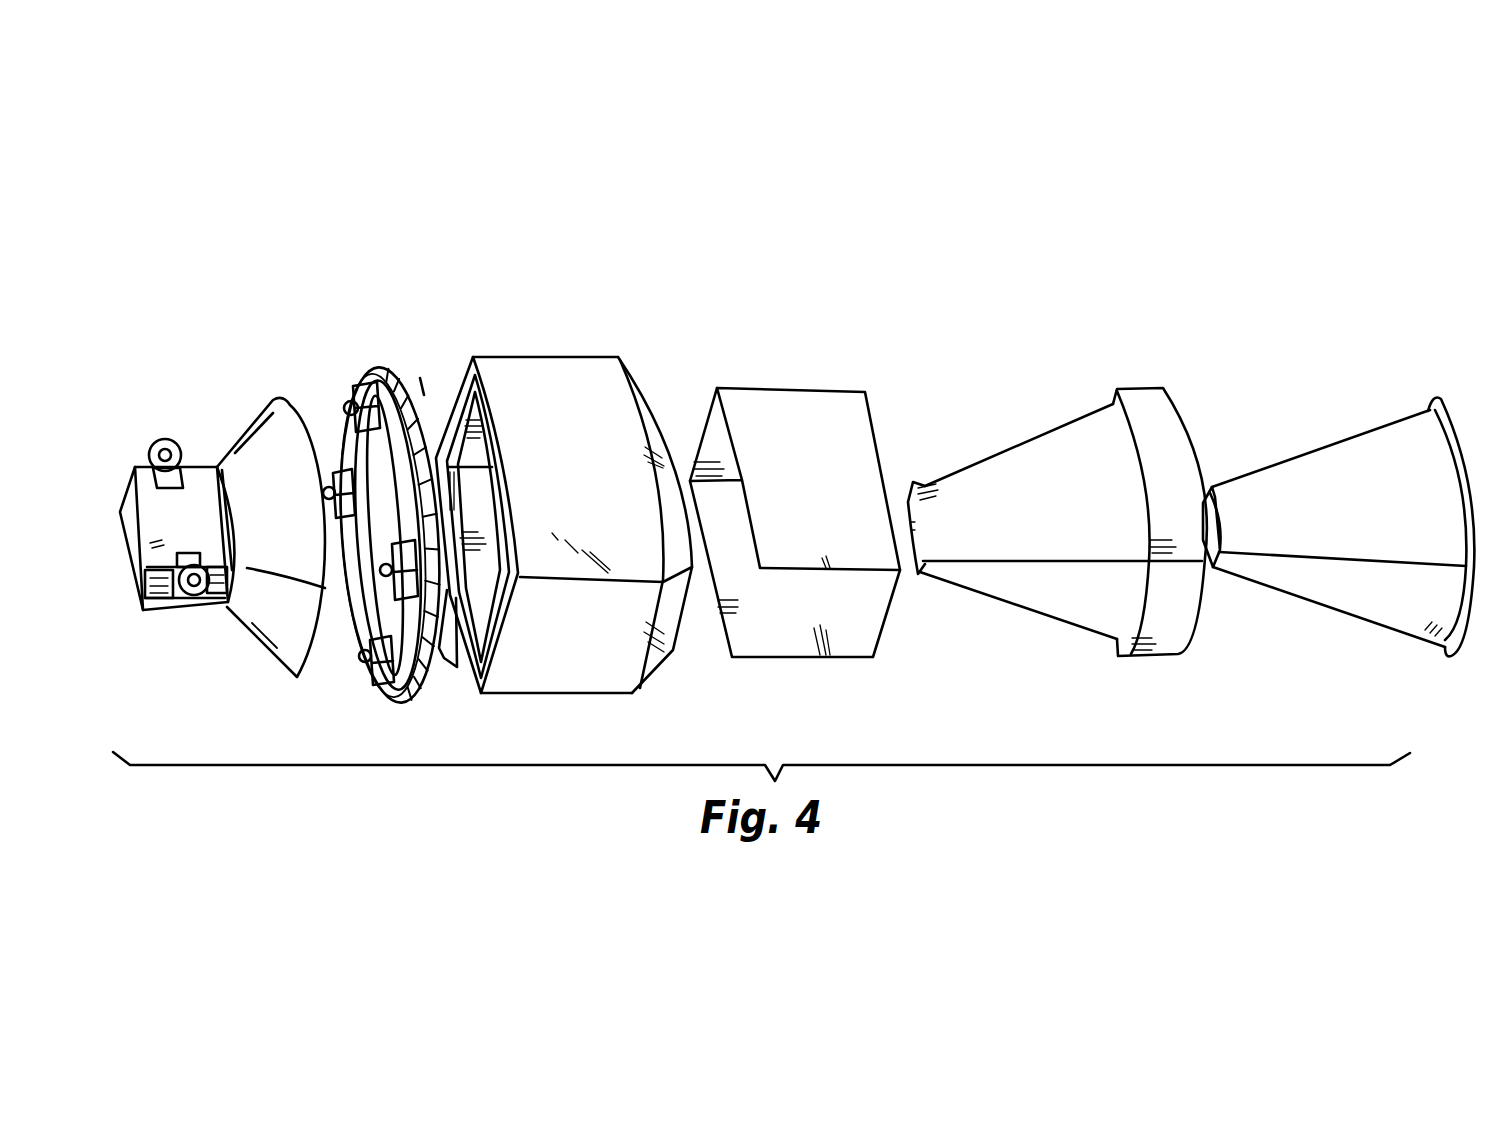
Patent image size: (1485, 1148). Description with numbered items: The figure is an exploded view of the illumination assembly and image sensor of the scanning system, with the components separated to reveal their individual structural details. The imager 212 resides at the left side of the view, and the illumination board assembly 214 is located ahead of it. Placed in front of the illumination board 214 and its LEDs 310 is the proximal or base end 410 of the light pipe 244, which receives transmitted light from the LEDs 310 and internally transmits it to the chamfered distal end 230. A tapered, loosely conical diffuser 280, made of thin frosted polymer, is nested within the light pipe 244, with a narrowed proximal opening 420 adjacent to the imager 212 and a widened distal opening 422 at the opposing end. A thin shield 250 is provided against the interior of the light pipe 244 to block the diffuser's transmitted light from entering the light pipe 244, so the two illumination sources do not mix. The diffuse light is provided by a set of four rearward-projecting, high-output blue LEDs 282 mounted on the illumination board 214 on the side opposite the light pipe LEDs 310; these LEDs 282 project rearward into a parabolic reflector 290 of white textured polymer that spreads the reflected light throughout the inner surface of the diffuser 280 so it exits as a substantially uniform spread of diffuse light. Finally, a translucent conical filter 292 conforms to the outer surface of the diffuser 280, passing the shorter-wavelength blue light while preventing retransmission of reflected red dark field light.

The imager 212 is at (203, 497).
The reflector 290 is at (273, 400).
The illumination board assembly 214 is at (380, 370).
The rearward-projecting LEDs 282 is at (335, 470).
The LEDs 310 is at (420, 388).
The proximal end of the light pipe 410 is at (480, 413).
The light pipe 244 is at (569, 440).
The chamfered distal end 230 is at (640, 380).
The shield 250 is at (766, 405).
The narrowed proximal opening 420 is at (910, 537).
The diffuser 280 is at (1029, 458).
The widened distal opening 422 is at (1193, 437).
The filter 292 is at (1340, 437).